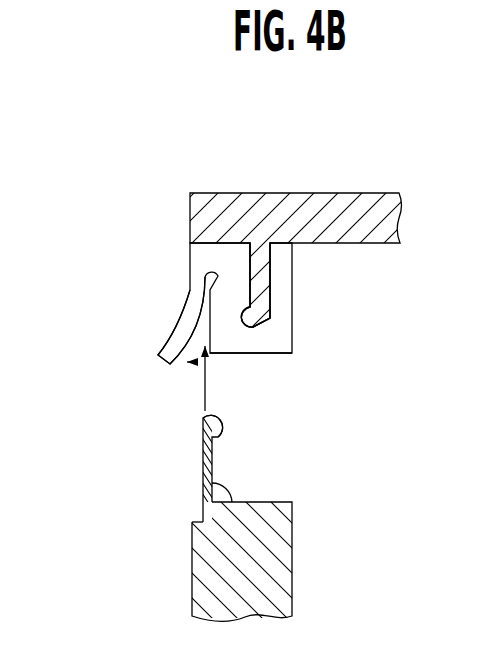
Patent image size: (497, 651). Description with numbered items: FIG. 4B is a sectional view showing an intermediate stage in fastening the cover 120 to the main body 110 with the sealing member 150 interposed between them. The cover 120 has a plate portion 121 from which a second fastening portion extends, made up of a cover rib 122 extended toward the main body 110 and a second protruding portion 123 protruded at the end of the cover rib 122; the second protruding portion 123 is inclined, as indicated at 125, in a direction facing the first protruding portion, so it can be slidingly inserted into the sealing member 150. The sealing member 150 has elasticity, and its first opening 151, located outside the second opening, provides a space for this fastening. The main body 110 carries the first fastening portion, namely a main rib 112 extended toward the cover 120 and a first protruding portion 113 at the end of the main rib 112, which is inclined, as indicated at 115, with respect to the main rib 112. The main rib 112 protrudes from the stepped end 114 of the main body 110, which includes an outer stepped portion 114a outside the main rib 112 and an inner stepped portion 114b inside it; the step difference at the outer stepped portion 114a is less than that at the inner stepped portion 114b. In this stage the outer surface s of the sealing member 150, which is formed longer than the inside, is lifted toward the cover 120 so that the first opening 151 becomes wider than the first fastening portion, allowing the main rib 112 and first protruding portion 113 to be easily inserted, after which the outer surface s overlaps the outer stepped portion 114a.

The main body 110 is at (210, 515).
The main rib 112 is at (207, 465).
The first protruding portion 113 is at (215, 415).
The end of the main body 114 is at (133, 501).
The outer stepped portion 114a is at (201, 517).
The inner stepped portion 114b is at (226, 490).
The inclined portion of the first protruding portion 115 is at (203, 418).
The cover 120 is at (262, 237).
The plate portion 121 is at (268, 203).
The cover rib 122 is at (260, 258).
The second protruding portion 123 is at (262, 340).
The inclined portion of the second protruding portion 125 is at (267, 325).
The sealing member 150 is at (247, 311).
The first opening 151 is at (203, 327).
The outer surface of the sealing member s is at (187, 301).